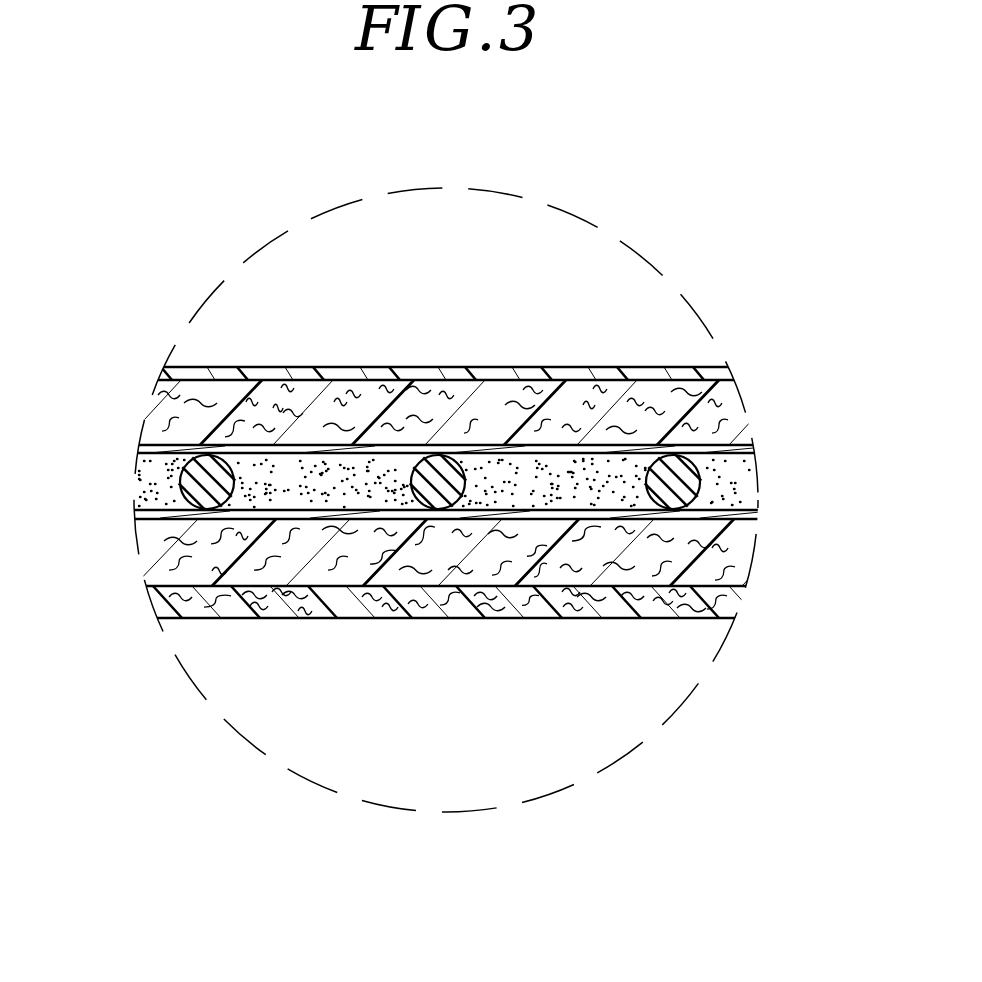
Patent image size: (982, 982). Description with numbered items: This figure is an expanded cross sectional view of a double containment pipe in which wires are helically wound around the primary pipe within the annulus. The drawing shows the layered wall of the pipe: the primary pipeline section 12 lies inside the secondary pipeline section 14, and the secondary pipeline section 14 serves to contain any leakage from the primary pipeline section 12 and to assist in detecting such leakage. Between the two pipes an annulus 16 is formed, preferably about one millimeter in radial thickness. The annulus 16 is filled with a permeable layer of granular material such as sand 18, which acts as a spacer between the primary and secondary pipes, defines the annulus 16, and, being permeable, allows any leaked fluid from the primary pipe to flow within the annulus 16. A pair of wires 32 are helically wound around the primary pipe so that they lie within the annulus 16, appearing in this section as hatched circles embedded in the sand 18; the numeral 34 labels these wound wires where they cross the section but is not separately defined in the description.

The primary pipeline section 12 is at (728, 558).
The secondary pipeline section 14 is at (710, 418).
The annulus 16 is at (737, 495).
The sand 18 is at (758, 472).
The wires 32 is at (453, 472).
The conductive yarn 34 is at (182, 484).